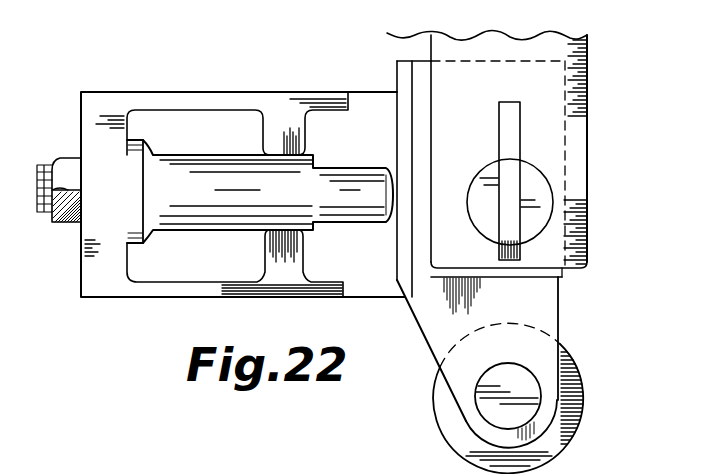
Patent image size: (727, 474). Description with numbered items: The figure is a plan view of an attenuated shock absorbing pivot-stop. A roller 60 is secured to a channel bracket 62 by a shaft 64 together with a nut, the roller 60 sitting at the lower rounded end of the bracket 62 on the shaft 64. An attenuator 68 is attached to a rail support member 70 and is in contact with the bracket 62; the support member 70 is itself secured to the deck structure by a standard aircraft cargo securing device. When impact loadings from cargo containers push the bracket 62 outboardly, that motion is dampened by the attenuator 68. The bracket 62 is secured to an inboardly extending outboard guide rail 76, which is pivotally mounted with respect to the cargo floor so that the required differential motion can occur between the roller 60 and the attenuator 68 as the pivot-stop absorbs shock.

The outboard guide rail 76 is at (472, 163).
The rail support member 70 is at (143, 297).
The attenuator 68 is at (190, 230).
The channel bracket 62 is at (430, 350).
The shaft 64 is at (541, 388).
The roller 60 is at (569, 446).